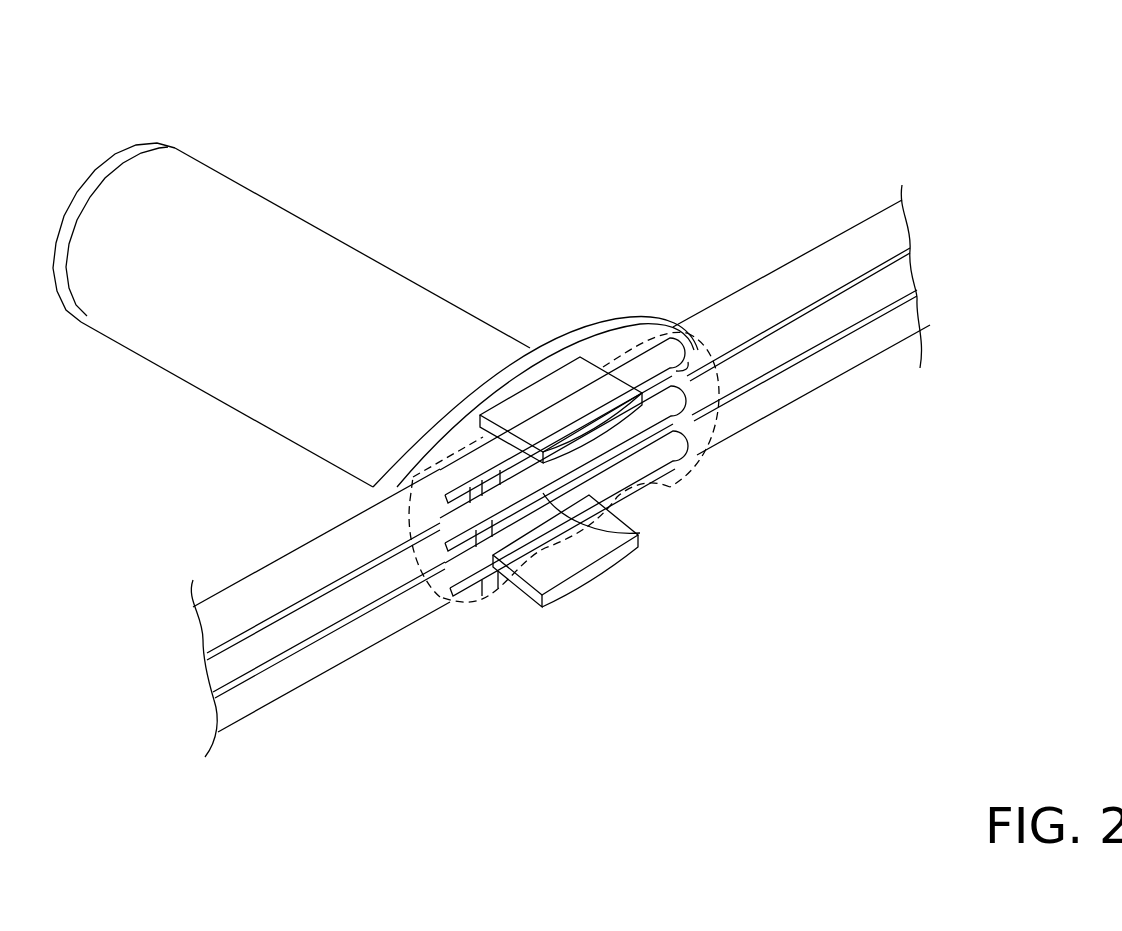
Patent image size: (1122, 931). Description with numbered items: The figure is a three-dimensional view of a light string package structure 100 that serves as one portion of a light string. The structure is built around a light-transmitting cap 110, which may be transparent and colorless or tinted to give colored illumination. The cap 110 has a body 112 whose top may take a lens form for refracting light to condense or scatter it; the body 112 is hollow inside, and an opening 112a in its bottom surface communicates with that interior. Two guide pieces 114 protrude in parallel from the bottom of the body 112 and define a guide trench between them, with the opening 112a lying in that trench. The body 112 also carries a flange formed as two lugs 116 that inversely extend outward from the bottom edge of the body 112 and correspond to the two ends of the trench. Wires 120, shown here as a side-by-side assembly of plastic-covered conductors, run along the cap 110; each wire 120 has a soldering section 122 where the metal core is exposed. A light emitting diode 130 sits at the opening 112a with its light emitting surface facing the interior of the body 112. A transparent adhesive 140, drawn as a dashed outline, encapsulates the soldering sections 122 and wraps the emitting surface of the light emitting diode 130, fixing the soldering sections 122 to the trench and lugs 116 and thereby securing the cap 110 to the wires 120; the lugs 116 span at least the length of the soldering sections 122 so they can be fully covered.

The light string package structure 100 is at (1000, 100).
The light-transmitting cap 110 is at (338, 232).
The body 112 is at (217, 375).
The opening 112a is at (630, 476).
The guide pieces 114 is at (541, 400).
The lugs 116 is at (604, 343).
The wire 120 is at (877, 330).
The soldering section 122 is at (457, 485).
The light emitting diode 130 is at (583, 470).
The transparent adhesive 140 is at (657, 483).